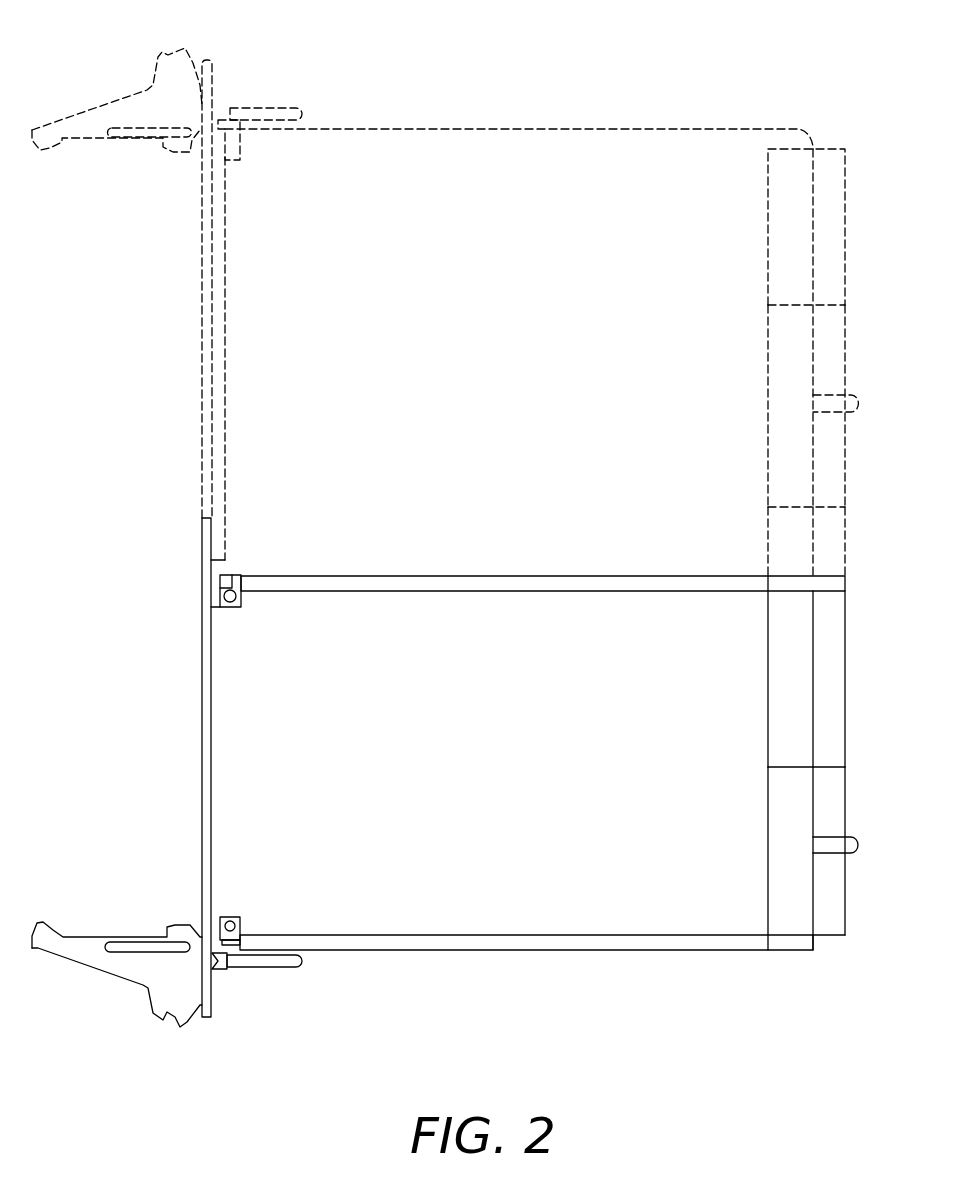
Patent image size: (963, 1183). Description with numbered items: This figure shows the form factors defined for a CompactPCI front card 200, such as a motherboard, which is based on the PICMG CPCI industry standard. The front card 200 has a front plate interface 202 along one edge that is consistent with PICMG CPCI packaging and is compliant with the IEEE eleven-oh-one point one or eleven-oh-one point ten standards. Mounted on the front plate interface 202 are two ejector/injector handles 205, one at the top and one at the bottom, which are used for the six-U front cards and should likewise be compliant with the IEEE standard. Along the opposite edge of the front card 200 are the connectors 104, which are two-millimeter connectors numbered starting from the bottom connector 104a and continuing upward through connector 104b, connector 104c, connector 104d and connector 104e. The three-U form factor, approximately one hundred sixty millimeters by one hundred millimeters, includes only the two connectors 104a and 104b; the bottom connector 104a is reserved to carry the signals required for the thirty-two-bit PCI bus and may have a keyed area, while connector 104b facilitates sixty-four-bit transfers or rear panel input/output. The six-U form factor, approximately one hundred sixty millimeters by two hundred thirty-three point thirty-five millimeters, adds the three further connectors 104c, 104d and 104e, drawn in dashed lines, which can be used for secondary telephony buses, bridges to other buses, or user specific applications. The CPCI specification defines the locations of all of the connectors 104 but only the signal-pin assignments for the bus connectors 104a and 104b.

The front card 200 is at (512, 903).
The front plate interface 202 is at (202, 625).
The ejector/injector handles 205 is at (95, 108).
The connectors 104 is at (758, 549).
The bottom connector 104a is at (778, 835).
The second connector 104b is at (780, 668).
The third connector 104c is at (778, 530).
The fourth connector 104d is at (778, 380).
The fifth connector 104e is at (778, 220).